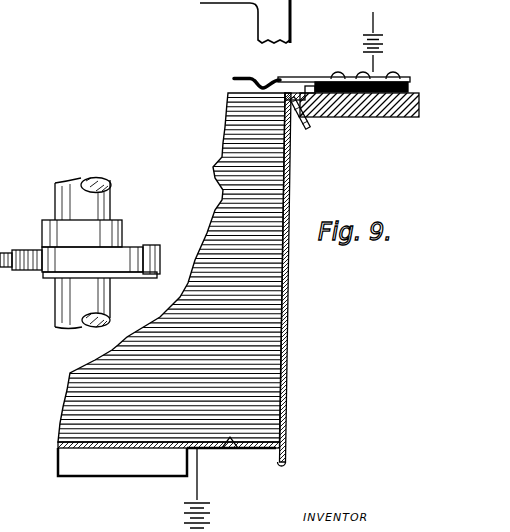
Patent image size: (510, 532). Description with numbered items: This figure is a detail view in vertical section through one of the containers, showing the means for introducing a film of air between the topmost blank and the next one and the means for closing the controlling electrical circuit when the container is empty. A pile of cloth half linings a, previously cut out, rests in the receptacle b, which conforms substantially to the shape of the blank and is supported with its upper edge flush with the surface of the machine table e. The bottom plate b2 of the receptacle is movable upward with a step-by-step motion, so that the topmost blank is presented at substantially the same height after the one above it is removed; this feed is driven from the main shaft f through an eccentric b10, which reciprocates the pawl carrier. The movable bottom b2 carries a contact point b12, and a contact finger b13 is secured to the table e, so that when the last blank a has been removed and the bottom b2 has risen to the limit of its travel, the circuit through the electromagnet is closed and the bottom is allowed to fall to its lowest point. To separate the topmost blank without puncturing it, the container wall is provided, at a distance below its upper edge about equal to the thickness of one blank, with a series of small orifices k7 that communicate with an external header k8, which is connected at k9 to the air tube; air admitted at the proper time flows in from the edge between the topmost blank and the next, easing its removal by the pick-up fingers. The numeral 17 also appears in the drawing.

The half lining a is at (232, 336).
The receptacle b is at (290, 285).
The bottom plate b2 is at (102, 448).
The eccentric b10 is at (142, 246).
The contact point b12 is at (232, 450).
The contact finger b13 is at (287, 79).
The machine table e is at (391, 117).
The main shaft f is at (83, 237).
The small orifices k7 is at (272, 84).
The external header k8 is at (300, 90).
The header connection k9 is at (303, 112).
The part 17 is at (7, 336).